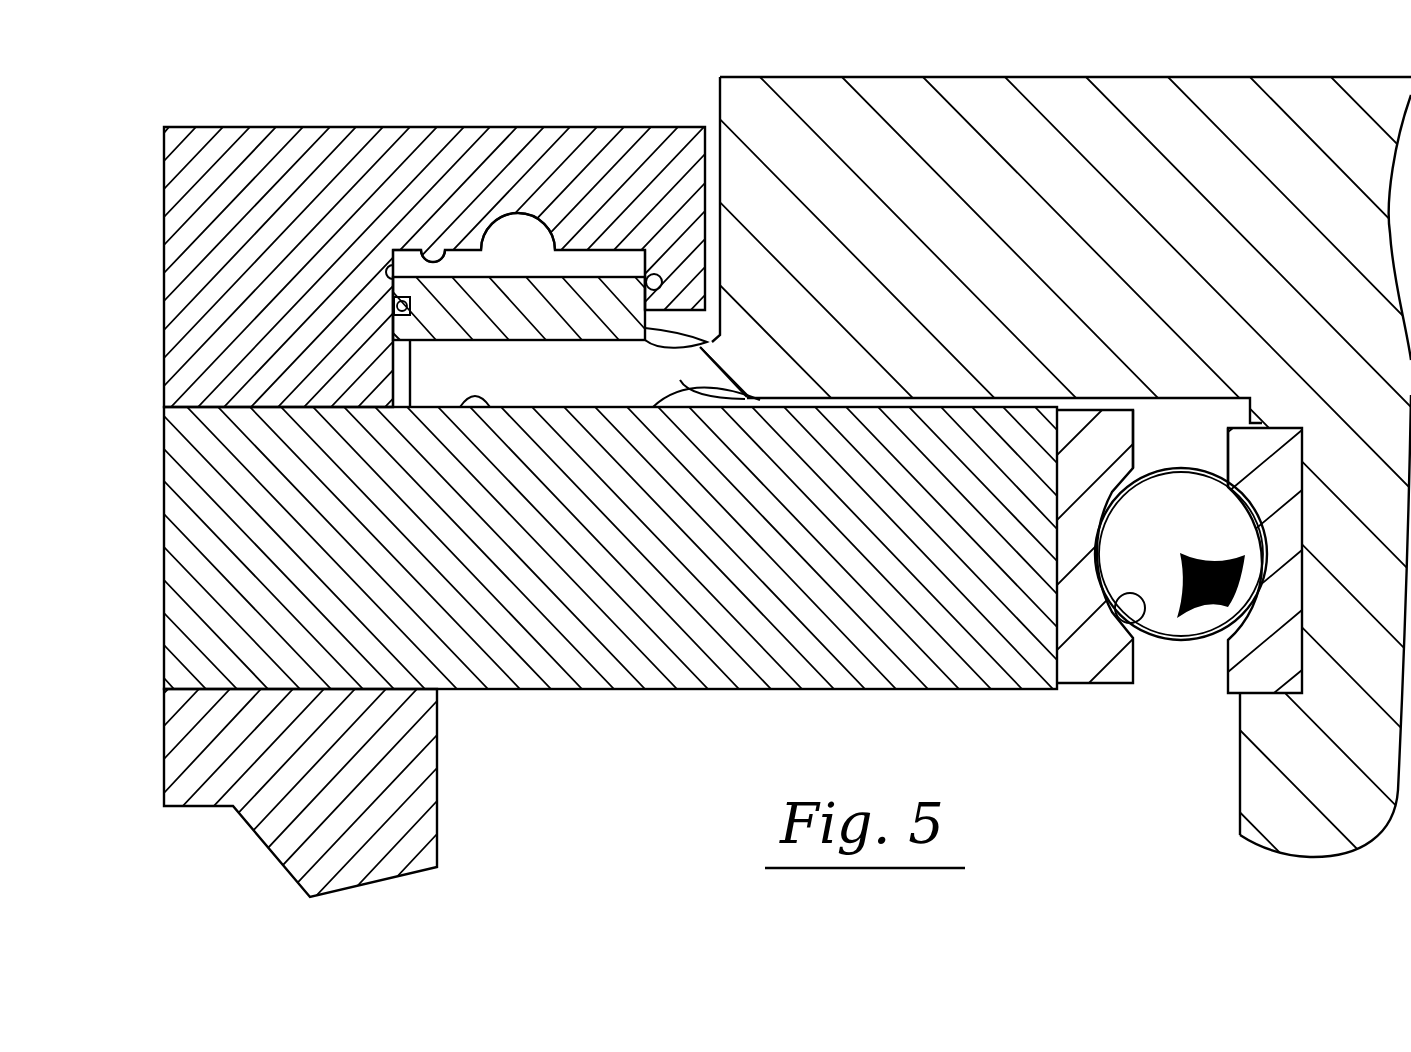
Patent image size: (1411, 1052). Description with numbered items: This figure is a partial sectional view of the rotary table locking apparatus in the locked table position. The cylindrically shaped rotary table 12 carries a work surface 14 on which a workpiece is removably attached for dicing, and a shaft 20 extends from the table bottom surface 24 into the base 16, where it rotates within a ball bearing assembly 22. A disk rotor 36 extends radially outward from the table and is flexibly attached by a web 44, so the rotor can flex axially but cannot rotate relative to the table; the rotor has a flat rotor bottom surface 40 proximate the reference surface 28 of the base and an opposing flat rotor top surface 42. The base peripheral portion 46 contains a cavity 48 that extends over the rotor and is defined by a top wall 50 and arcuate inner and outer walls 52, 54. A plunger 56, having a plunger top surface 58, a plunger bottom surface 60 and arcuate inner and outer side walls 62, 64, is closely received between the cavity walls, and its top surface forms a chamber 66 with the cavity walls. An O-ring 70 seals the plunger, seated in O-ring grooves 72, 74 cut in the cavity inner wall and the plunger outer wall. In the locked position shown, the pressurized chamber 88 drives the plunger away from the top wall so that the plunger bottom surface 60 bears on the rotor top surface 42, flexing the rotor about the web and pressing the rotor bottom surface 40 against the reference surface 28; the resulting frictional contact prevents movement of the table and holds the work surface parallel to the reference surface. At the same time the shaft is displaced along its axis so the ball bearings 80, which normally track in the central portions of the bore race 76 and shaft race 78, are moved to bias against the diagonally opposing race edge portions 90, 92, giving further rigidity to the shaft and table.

The rotary table 12 is at (1270, 117).
The work surface 14 is at (950, 76).
The base 16 is at (180, 598).
The shaft 20 is at (1305, 860).
The ball bearing assembly 22 is at (1191, 741).
The table bottom surface 24 is at (928, 398).
The reference surface 28 is at (496, 408).
The disk rotor 36 is at (548, 392).
The rotor bottom surface 40 is at (613, 408).
The rotor top surface 42 is at (558, 338).
The web 44 is at (750, 395).
The base peripheral portion 46 is at (176, 259).
The cavity 48 is at (513, 232).
The top wall 50 is at (438, 252).
The inner wall 52 is at (627, 246).
The outer wall 54 is at (390, 260).
The plunger 56 is at (533, 325).
The plunger top surface 58 is at (503, 275).
The plunger bottom surface 60 is at (489, 346).
The plunger inner side wall 62 is at (710, 342).
The plunger outer side wall 64 is at (393, 332).
The chamber 66 is at (592, 252).
The O-ring 70 is at (392, 303).
The O-ring groove 72 is at (664, 280).
The O-ring groove 74 is at (406, 273).
The bore race 76 is at (1105, 665).
The shaft race 78 is at (1280, 666).
The ball bearings 80 is at (1160, 545).
The pressurized chamber 88 is at (408, 252).
The race edge portion 90 is at (1255, 518).
The race edge portion 92 is at (1142, 621).